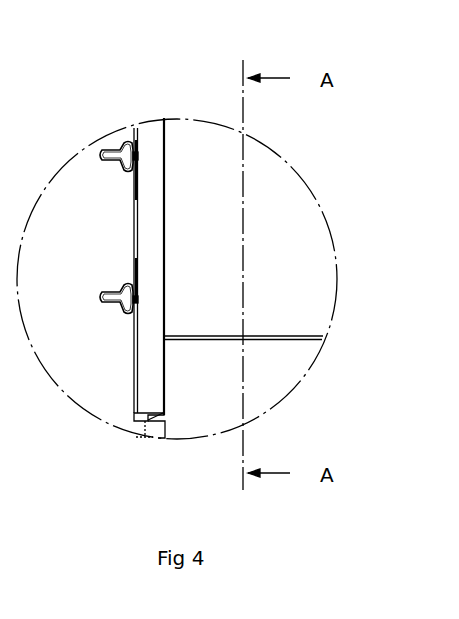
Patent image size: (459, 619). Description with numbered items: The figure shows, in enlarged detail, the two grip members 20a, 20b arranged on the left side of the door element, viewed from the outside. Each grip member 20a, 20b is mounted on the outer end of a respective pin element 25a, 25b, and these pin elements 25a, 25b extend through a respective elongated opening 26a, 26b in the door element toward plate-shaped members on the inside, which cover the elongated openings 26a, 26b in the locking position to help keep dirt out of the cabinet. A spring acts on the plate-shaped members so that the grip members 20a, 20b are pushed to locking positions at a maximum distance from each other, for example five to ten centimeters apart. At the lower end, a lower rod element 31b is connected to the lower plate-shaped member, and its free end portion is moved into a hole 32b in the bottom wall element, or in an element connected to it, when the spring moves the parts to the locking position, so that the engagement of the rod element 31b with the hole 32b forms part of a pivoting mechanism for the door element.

The grip member 20a is at (122, 151).
The pin element 25a is at (138, 157).
The elongated opening 26a is at (137, 181).
The elongated opening 26b is at (137, 272).
The pin element 25b is at (138, 300).
The grip member 20b is at (122, 300).
The lower rod element 31b is at (136, 417).
The hole 32b is at (146, 424).